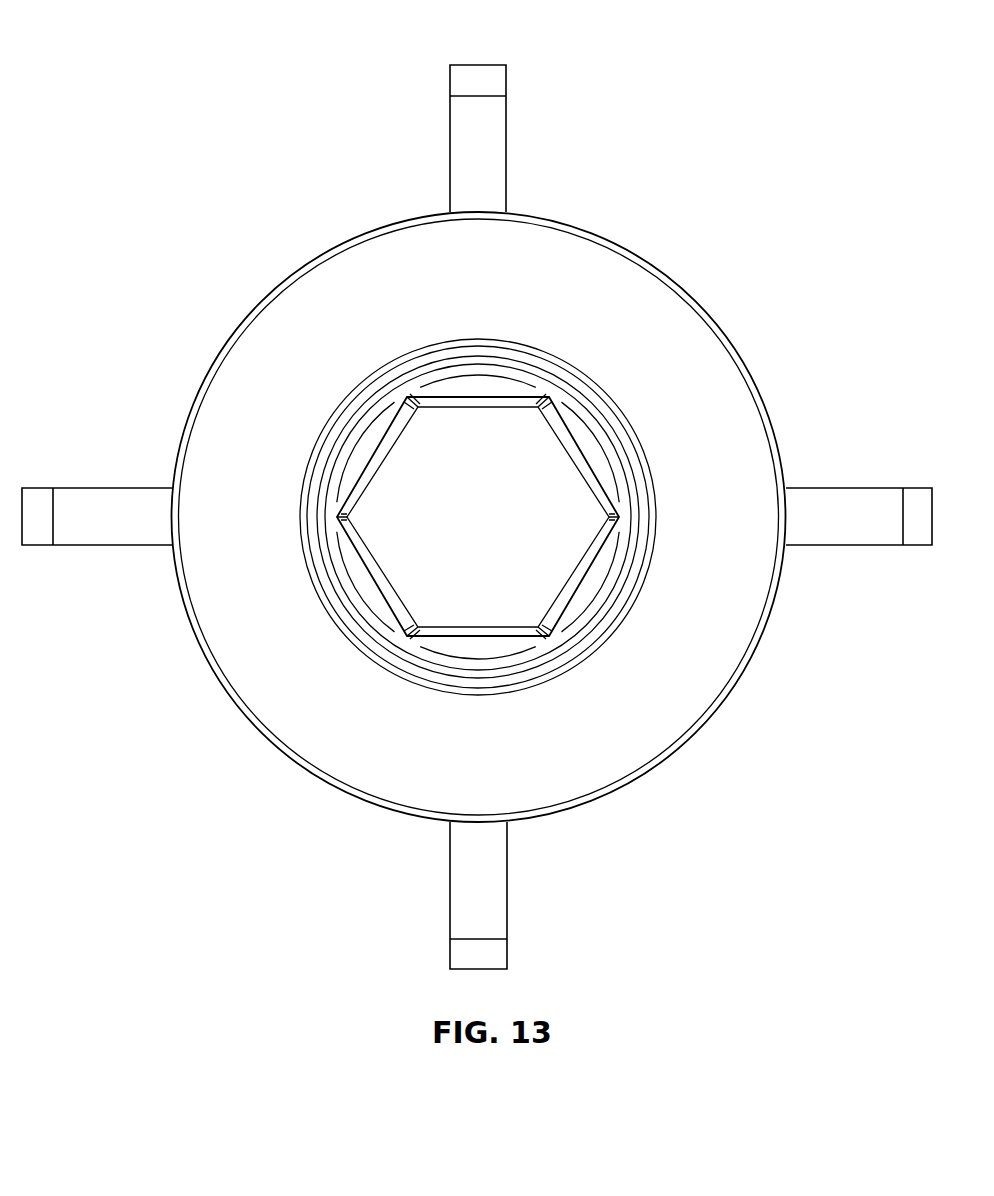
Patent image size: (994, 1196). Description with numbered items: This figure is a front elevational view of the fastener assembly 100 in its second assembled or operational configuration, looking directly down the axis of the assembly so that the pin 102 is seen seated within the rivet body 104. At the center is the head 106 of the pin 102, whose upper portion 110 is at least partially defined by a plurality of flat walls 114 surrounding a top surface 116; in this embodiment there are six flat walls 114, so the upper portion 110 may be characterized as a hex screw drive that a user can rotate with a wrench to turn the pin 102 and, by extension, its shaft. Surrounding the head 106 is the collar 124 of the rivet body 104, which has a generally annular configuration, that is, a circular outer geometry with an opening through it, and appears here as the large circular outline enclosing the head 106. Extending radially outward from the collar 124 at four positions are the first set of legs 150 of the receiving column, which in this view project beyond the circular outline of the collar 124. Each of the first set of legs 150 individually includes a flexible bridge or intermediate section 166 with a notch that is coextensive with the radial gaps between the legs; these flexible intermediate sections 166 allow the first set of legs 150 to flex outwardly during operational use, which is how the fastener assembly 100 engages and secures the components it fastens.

The fastener assembly 100 is at (113, 183).
The pin 102 is at (543, 432).
The rivet body 104 is at (663, 325).
The head 106 is at (516, 614).
The upper portion 110 is at (432, 432).
The flat walls 114 is at (372, 565).
The top surface 116 is at (562, 528).
The collar 124 is at (718, 685).
The first set of legs 150 is at (508, 162).
The flexible intermediate section 166 is at (467, 74).